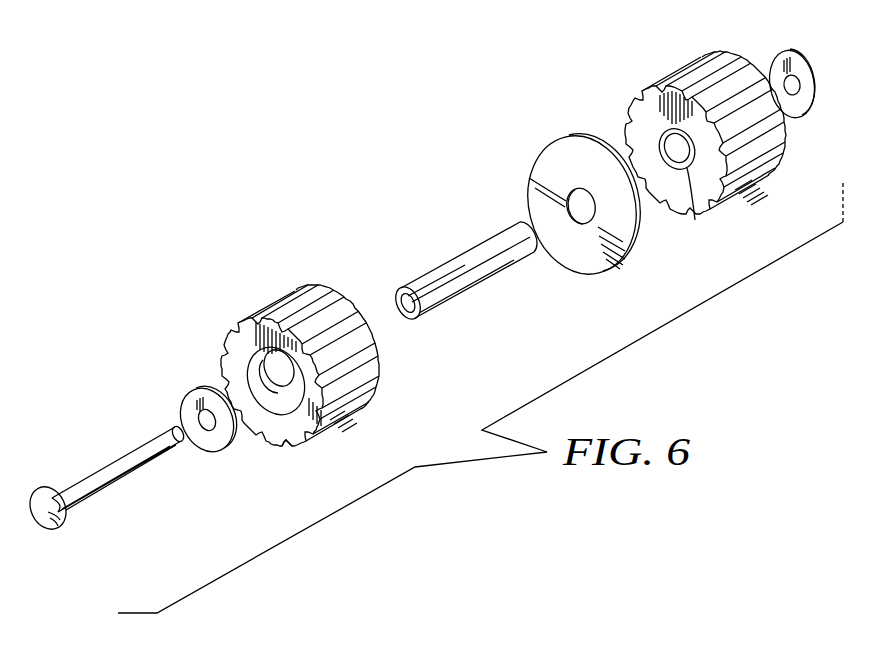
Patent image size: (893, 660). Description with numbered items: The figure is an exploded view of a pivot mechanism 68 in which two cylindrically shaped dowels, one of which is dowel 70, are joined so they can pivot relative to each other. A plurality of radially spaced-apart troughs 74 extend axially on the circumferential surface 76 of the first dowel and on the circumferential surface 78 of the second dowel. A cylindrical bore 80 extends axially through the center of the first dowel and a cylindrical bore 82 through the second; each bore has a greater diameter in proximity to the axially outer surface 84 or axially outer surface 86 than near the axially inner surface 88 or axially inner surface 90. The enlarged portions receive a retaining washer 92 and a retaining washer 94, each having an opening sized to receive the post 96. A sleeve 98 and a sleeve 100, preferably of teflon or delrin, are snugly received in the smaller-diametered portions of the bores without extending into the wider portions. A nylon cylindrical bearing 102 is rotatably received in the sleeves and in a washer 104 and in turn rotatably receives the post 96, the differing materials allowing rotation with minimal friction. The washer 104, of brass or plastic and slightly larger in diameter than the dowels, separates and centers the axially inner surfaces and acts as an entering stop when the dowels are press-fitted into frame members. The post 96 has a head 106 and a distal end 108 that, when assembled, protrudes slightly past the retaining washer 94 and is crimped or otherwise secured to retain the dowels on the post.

The pivot mechanism 68 is at (164, 244).
The dowel 70 is at (270, 302).
The troughs 74 is at (350, 400).
The circumferential surface 76 is at (310, 292).
The circumferential surface 78 is at (697, 63).
The cylindrical bore 80 is at (362, 325).
The cylindrical bore 82 is at (695, 220).
The axially outer surface 84 is at (290, 432).
The axially outer surface 86 is at (743, 63).
The axially inner surface 88 is at (377, 370).
The axially inner surface 90 is at (648, 110).
The retaining washer 92 is at (222, 442).
The retaining washer 94 is at (807, 82).
The post 96 is at (115, 470).
The sleeve 98 is at (278, 368).
The sleeve 100 is at (661, 137).
The cylindrical bearing 102 is at (467, 267).
The washer 104 is at (552, 157).
The head 106 is at (42, 515).
The distal end 108 is at (176, 433).